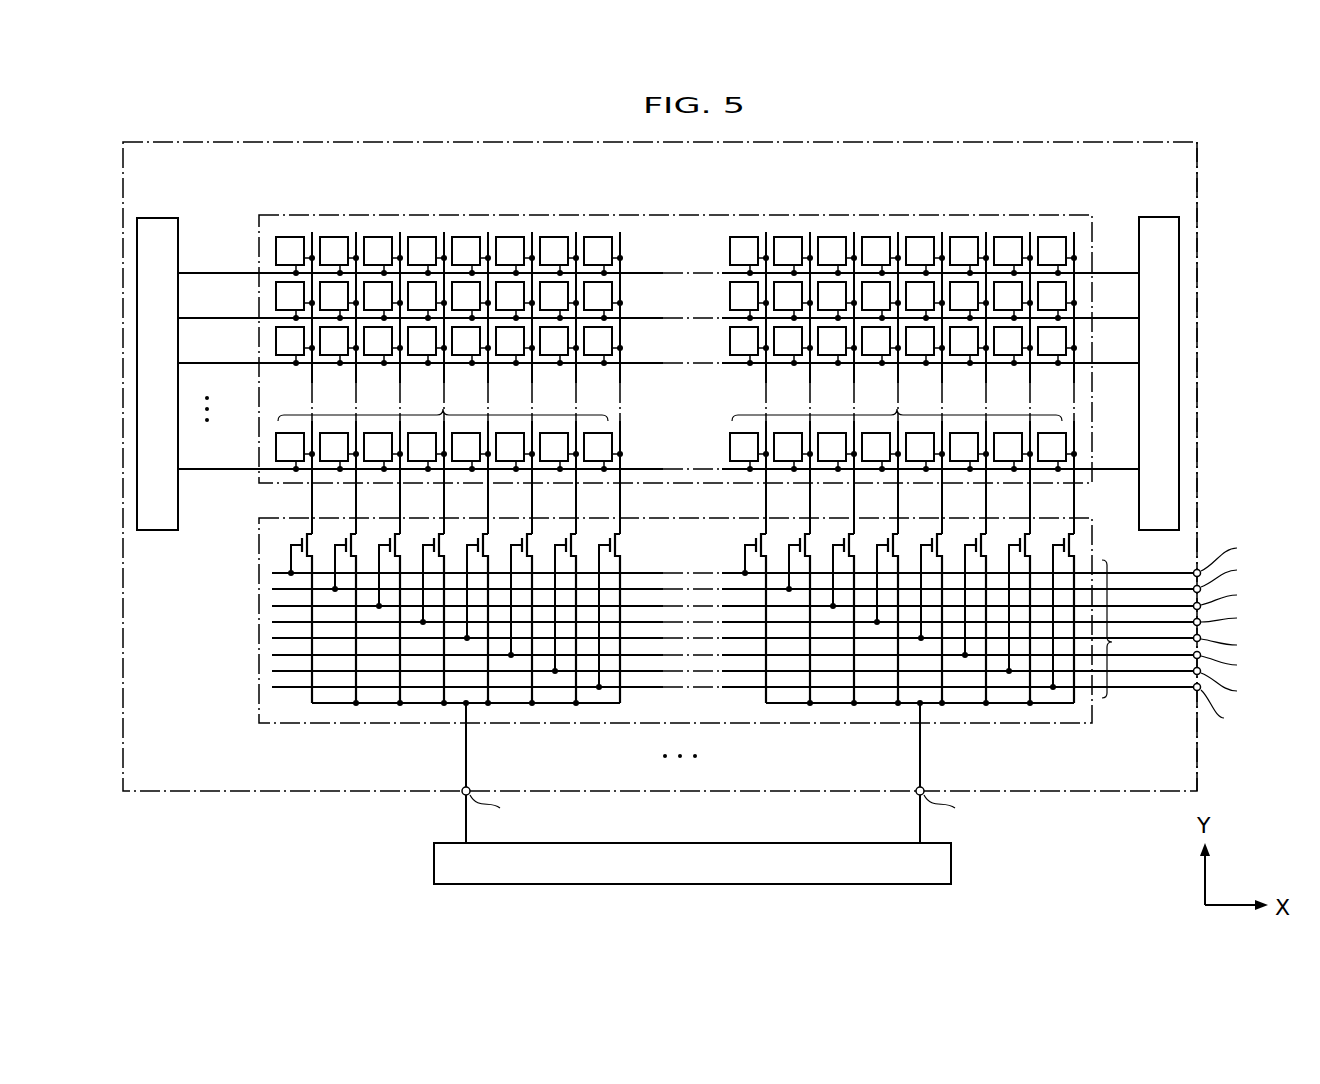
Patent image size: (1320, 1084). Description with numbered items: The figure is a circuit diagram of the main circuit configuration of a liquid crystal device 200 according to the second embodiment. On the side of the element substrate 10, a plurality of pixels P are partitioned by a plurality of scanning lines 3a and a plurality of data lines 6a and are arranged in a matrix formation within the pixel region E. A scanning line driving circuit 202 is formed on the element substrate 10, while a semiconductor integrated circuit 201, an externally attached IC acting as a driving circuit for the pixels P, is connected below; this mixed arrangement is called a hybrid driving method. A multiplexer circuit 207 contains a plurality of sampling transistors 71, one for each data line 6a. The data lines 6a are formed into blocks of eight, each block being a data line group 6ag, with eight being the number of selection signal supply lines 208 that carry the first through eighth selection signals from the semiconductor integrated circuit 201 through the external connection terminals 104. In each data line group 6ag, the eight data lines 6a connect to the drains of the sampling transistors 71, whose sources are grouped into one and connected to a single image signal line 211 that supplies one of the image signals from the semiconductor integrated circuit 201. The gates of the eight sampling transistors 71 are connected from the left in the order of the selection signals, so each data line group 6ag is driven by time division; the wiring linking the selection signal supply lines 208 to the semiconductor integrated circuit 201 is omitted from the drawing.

The liquid crystal device 200 is at (1224, 147).
The element substrate 10 is at (1197, 298).
The scanning line driving circuit 202 is at (162, 215).
The scanning line 3a is at (217, 470).
The data line 6a is at (620, 438).
The data line group 6ag is at (670, 404).
The sampling transistor 71 is at (636, 543).
The multiplexer circuit 207 is at (259, 616).
The selection signal supply line 208 is at (1112, 642).
The external connection terminal 104 is at (1200, 569).
The image signal line 211 is at (466, 750).
The semiconductor integrated circuit 201 is at (951, 860).
The pixel P is at (293, 233).
The pixel region E is at (988, 213).